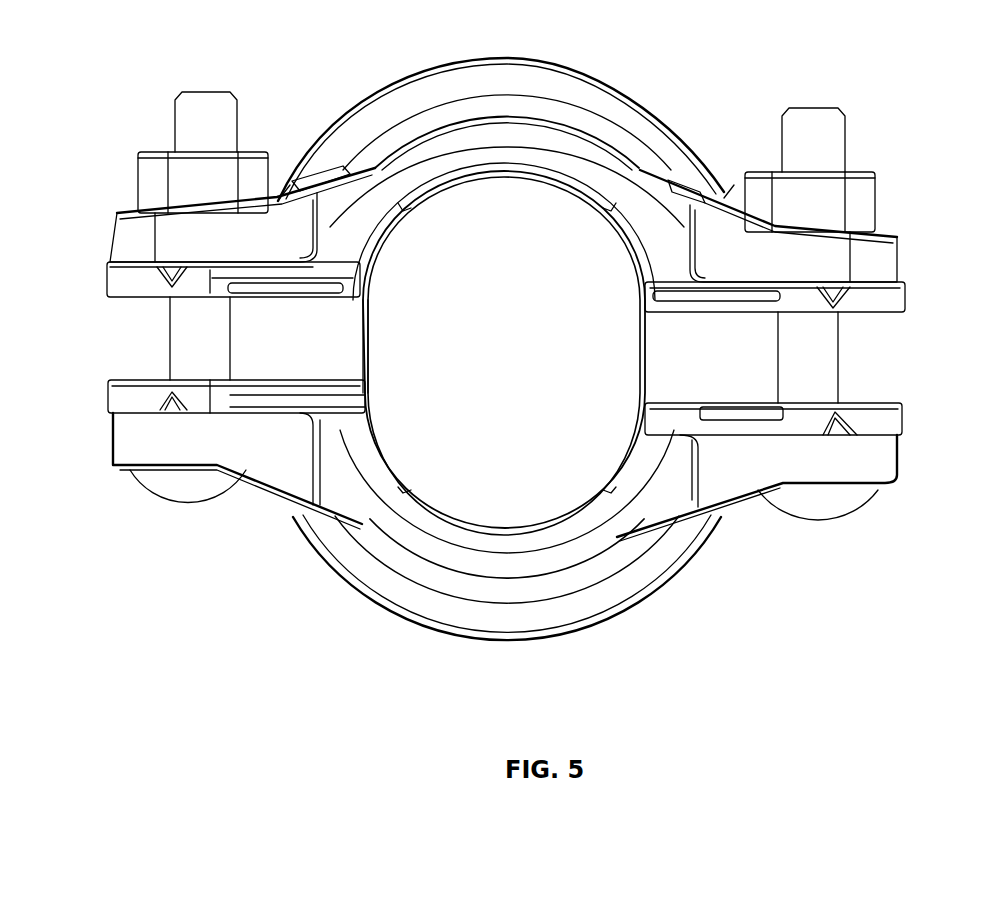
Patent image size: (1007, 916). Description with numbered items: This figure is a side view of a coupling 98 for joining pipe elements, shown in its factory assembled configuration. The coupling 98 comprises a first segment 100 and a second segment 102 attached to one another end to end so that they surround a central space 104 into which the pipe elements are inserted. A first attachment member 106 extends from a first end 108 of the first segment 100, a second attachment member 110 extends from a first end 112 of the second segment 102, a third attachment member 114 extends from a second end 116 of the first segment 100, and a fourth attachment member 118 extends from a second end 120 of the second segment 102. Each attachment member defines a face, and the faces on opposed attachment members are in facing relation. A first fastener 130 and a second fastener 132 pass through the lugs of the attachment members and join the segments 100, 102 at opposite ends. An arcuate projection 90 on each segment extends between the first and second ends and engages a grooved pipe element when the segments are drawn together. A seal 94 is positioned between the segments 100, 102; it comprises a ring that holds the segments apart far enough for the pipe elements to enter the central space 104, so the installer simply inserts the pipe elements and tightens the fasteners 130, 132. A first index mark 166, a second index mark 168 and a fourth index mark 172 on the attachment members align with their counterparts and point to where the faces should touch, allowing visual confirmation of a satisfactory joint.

The first arcuate projection 90 is at (497, 155).
The seal 94 is at (335, 368).
The coupling 98 is at (798, 33).
The first segment 100 is at (565, 630).
The second segment 102 is at (522, 62).
The central space 104 is at (504, 353).
The first attachment member 106 is at (832, 460).
The first end of the first segment 108 is at (680, 522).
The second attachment member 110 is at (800, 252).
The first end of the second segment 112 is at (705, 198).
The third attachment member 114 is at (180, 433).
The second end of the first segment 116 is at (285, 492).
The fourth attachment member 118 is at (220, 237).
The second end of the second segment 120 is at (322, 180).
The first fastener 130 is at (830, 342).
The second fastener 132 is at (170, 333).
The first index mark 166 is at (835, 412).
The second index mark 168 is at (850, 298).
The fourth index mark 172 is at (170, 272).